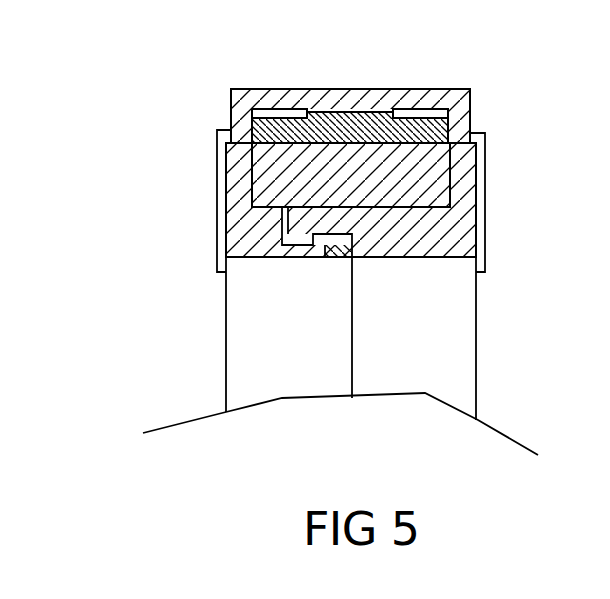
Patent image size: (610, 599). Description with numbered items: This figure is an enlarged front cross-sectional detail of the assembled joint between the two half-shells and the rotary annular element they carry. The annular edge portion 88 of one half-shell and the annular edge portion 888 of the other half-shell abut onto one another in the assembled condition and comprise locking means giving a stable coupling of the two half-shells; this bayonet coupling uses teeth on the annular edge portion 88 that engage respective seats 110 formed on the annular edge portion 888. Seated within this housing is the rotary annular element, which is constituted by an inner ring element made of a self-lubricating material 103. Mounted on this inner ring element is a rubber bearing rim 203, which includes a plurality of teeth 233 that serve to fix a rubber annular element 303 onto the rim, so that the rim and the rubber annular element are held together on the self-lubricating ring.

The rubber annular element 303 is at (415, 93).
The teeth 233 is at (303, 113).
The rubber bearing rim 203 is at (430, 138).
The inner ring element made of a self-lubricating material 103 is at (430, 185).
The annular edge portion 88 is at (438, 238).
The annular edge portion 888 is at (243, 243).
The seats 110 is at (312, 236).